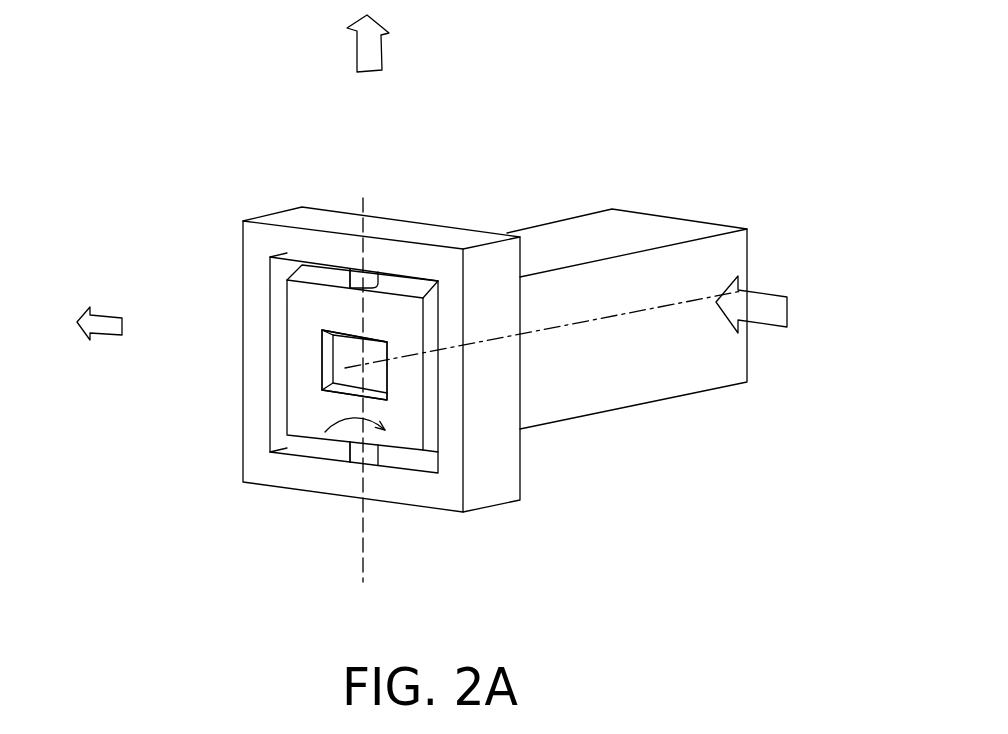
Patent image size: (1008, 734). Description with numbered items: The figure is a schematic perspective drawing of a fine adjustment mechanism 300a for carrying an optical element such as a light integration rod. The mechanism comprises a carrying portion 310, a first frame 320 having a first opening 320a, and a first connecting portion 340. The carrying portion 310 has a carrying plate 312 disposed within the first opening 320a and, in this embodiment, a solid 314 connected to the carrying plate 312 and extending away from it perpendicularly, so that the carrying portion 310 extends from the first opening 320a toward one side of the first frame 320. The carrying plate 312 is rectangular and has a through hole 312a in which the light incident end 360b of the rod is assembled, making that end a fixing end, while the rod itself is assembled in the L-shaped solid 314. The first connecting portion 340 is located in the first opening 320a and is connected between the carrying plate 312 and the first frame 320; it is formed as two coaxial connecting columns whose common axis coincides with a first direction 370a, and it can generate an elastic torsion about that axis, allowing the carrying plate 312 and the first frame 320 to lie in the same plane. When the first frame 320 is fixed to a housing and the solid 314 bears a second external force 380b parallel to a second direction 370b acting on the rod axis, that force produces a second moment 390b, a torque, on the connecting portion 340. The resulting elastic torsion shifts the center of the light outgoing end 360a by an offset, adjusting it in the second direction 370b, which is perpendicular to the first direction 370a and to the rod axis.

The fine adjustment mechanism 300a is at (805, 595).
The carrying portion 310 is at (722, 500).
The carrying plate 312 is at (408, 398).
The through hole 312a is at (320, 379).
The solid 314 is at (660, 388).
The first frame 320 is at (297, 238).
The first opening 320a is at (278, 309).
The first connecting portion 340 is at (355, 272).
The light outgoing end 360a is at (765, 242).
The light incident end 360b is at (354, 365).
The first direction 370a is at (380, 47).
The second direction 370b is at (108, 310).
The second external force 380b is at (777, 312).
The second moment 390b is at (330, 424).